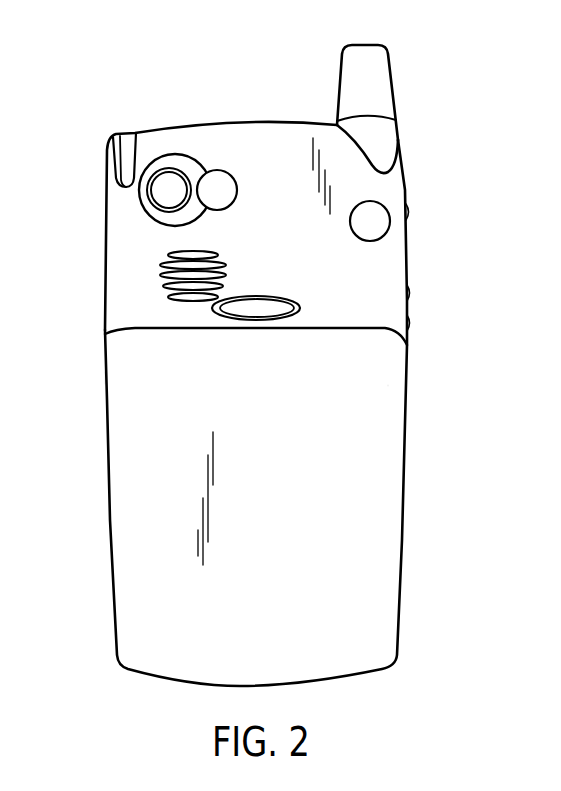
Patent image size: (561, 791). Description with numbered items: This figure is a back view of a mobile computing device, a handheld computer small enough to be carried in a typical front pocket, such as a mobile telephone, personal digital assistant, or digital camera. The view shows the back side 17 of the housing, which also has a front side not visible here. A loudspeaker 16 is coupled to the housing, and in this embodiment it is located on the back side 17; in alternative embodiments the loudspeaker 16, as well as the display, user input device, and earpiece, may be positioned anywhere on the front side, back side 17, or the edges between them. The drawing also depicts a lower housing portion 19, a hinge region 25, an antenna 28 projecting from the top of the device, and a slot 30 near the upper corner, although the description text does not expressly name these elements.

The loudspeaker 16 is at (165, 274).
The back side 17 is at (296, 495).
The housing 19 is at (388, 385).
The hinge 25 is at (105, 378).
The antenna 28 is at (392, 72).
The slot 30 is at (128, 134).